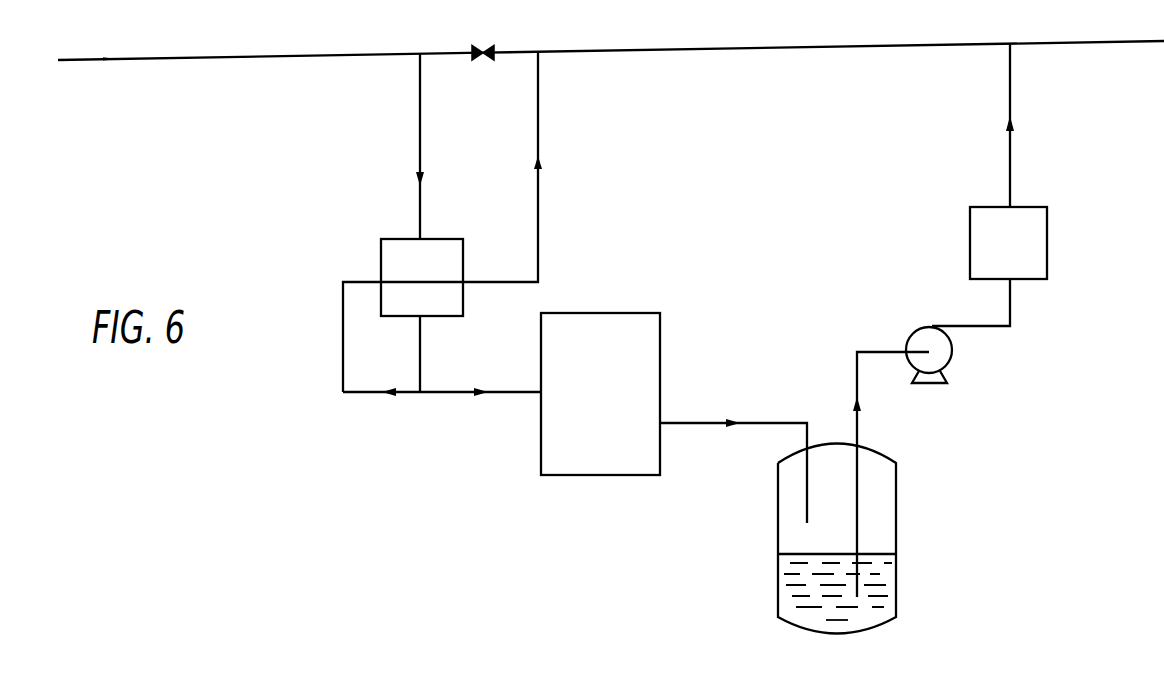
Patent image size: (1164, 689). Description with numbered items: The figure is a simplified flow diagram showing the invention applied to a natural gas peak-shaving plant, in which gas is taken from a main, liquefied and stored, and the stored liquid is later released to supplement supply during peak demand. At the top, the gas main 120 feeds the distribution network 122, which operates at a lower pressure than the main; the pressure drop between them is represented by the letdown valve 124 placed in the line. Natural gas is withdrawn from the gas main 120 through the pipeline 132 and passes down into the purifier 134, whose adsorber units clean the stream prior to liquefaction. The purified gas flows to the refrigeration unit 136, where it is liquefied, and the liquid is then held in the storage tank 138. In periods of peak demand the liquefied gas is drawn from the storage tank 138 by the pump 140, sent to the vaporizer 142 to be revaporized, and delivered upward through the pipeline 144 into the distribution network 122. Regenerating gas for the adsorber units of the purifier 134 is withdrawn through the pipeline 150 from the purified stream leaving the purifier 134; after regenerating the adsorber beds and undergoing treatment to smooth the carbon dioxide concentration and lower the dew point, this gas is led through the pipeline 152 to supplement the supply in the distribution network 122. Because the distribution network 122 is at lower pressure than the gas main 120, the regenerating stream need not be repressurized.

The gas main 120 is at (216, 57).
The distribution network 122 is at (745, 48).
The letdown valve 124 is at (483, 59).
The pipeline 132 is at (418, 152).
The purifier 134 is at (381, 255).
The refrigeration unit 136 is at (661, 352).
The storage tank 138 is at (897, 553).
The pump 140 is at (952, 343).
The vaporizer 142 is at (1048, 240).
The pipeline 144 is at (1010, 150).
The pipeline 150 is at (373, 394).
The pipeline 152 is at (540, 210).